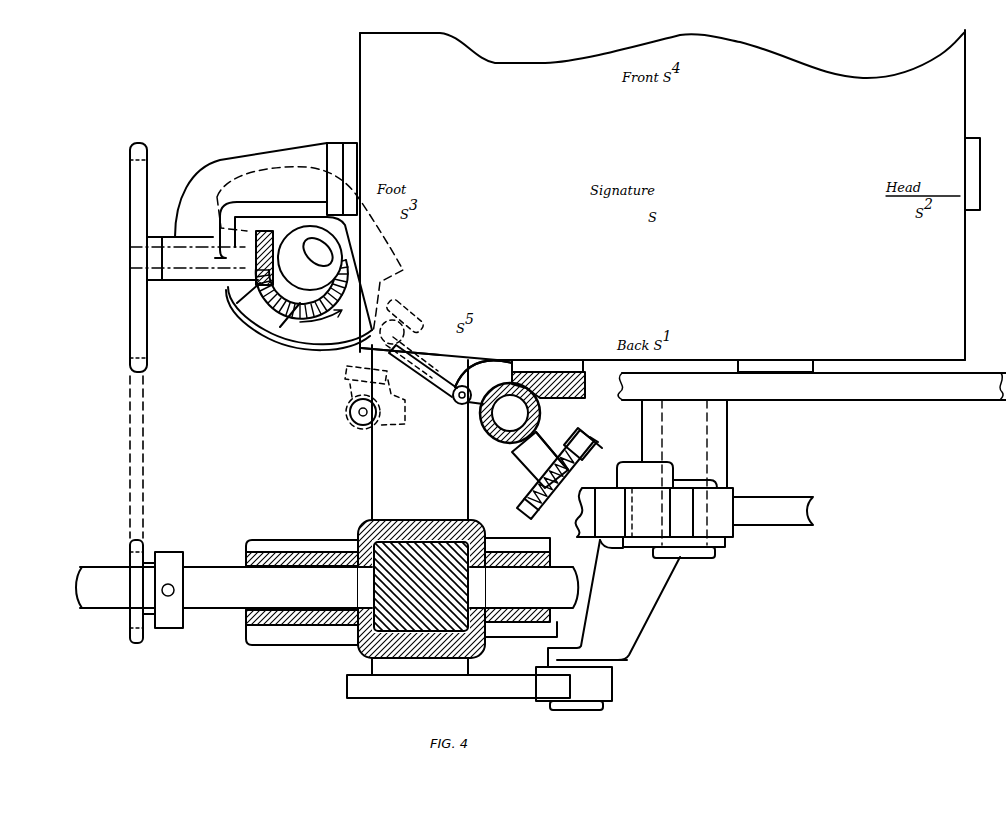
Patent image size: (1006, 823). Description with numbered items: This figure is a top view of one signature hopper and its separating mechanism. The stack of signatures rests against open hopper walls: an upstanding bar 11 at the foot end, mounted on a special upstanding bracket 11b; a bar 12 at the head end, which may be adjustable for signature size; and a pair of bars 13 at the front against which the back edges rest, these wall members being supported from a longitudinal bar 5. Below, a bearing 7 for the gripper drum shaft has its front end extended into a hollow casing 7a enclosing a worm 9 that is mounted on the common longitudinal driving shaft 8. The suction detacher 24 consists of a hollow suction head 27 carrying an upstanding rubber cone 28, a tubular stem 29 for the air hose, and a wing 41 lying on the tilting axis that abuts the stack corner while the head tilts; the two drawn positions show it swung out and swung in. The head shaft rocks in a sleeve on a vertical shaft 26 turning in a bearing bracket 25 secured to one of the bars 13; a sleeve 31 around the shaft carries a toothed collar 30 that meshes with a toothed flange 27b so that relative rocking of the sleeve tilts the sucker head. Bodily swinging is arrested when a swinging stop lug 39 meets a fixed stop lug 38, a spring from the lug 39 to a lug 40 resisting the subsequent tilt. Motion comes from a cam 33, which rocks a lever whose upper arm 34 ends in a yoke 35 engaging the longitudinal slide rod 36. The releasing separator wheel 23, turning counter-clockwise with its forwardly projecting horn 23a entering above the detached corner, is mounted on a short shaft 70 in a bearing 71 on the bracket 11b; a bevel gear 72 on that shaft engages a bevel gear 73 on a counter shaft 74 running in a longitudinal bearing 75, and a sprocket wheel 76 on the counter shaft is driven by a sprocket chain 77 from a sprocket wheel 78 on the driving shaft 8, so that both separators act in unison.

The longitudinal bar 5 is at (812, 386).
The bearing 7 is at (420, 510).
The hollow casing 7a is at (368, 641).
The driving shaft 8 is at (327, 587).
The worm 9 is at (421, 586).
The upstanding bar 11 is at (357, 168).
The upstanding bracket 11b is at (267, 158).
The bar 12 is at (985, 174).
The bars 13 is at (662, 366).
The separator wheel 23 is at (289, 305).
The horn 23a is at (226, 181).
The suction detacher 24 is at (335, 388).
The bearing bracket 25 is at (548, 389).
The vertical shaft 26 is at (510, 413).
The suction head 27 is at (403, 381).
The toothed flange 27b is at (470, 368).
The rubber cone 28 is at (376, 342).
The stem 29 is at (458, 405).
The toothed collar 30 is at (483, 382).
The sleeve 31 is at (505, 445).
The cam 33 is at (458, 686).
The upper arm 34 is at (631, 555).
The yoke 35 is at (654, 512).
The slide rod 36 is at (773, 511).
The fixed stop lug 38 is at (544, 451).
The swinging stop lug 39 is at (551, 474).
The lug 40 is at (597, 443).
The wing 41 is at (400, 308).
The short shaft 70 is at (320, 249).
The bearing 71 is at (310, 258).
The bevel gear 72 is at (292, 316).
The bevel gear 73 is at (255, 288).
The counter shaft 74 is at (195, 272).
The longitudinal bearing 75 is at (191, 238).
The sprocket wheel 76 is at (128, 306).
The sprocket chain 77 is at (128, 408).
The sprocket wheel 78 is at (128, 548).